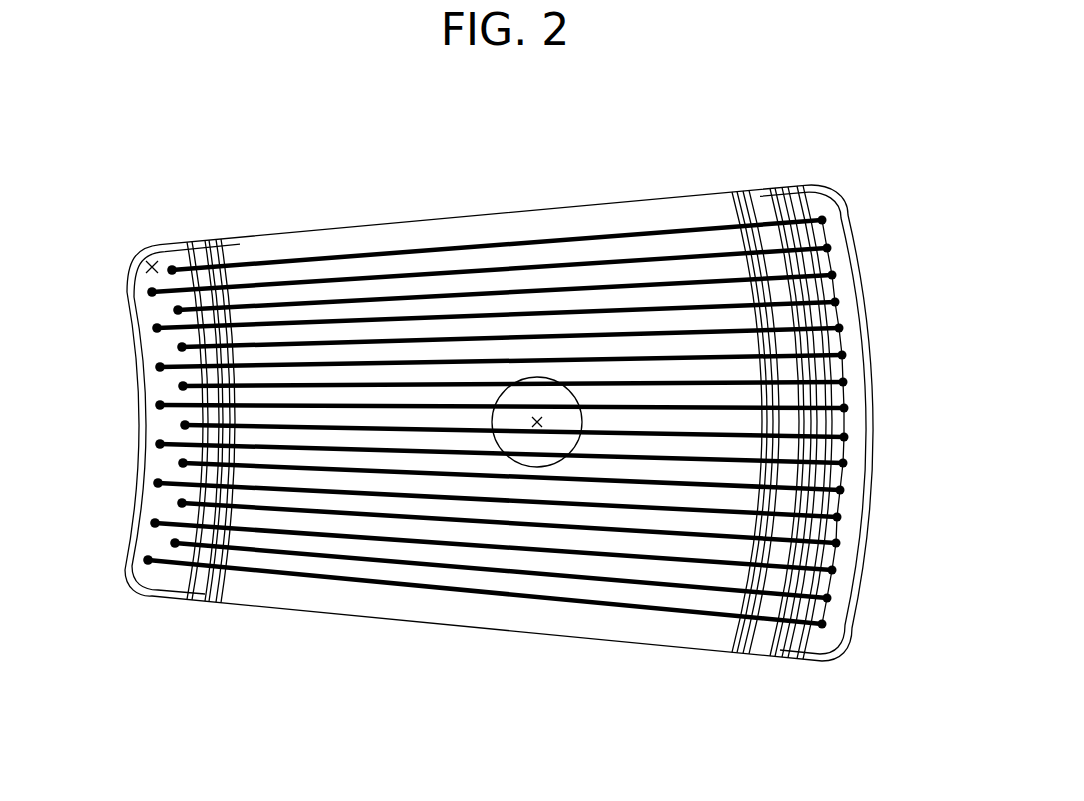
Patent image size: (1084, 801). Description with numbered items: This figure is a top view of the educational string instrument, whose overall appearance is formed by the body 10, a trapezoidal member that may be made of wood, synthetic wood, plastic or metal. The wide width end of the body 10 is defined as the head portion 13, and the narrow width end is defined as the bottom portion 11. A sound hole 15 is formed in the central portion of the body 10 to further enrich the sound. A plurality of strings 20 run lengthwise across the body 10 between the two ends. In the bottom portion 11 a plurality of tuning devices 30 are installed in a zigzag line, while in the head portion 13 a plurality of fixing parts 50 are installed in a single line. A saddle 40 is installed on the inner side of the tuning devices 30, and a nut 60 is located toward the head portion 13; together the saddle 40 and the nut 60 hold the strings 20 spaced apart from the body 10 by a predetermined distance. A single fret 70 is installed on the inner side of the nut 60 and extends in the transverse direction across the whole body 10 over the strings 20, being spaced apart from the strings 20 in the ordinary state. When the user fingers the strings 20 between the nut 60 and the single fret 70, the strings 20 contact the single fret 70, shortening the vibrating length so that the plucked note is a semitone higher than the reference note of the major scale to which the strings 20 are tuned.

The body 10 is at (370, 228).
The bottom portion 11 is at (150, 266).
The head portion 13 is at (792, 200).
The sound hole 15 is at (537, 432).
The strings 20 is at (478, 246).
The tuning devices 30 is at (173, 265).
The saddle 40 is at (211, 250).
The fixing parts 50 is at (846, 463).
The nut 60 is at (771, 658).
The single fret 70 is at (732, 652).